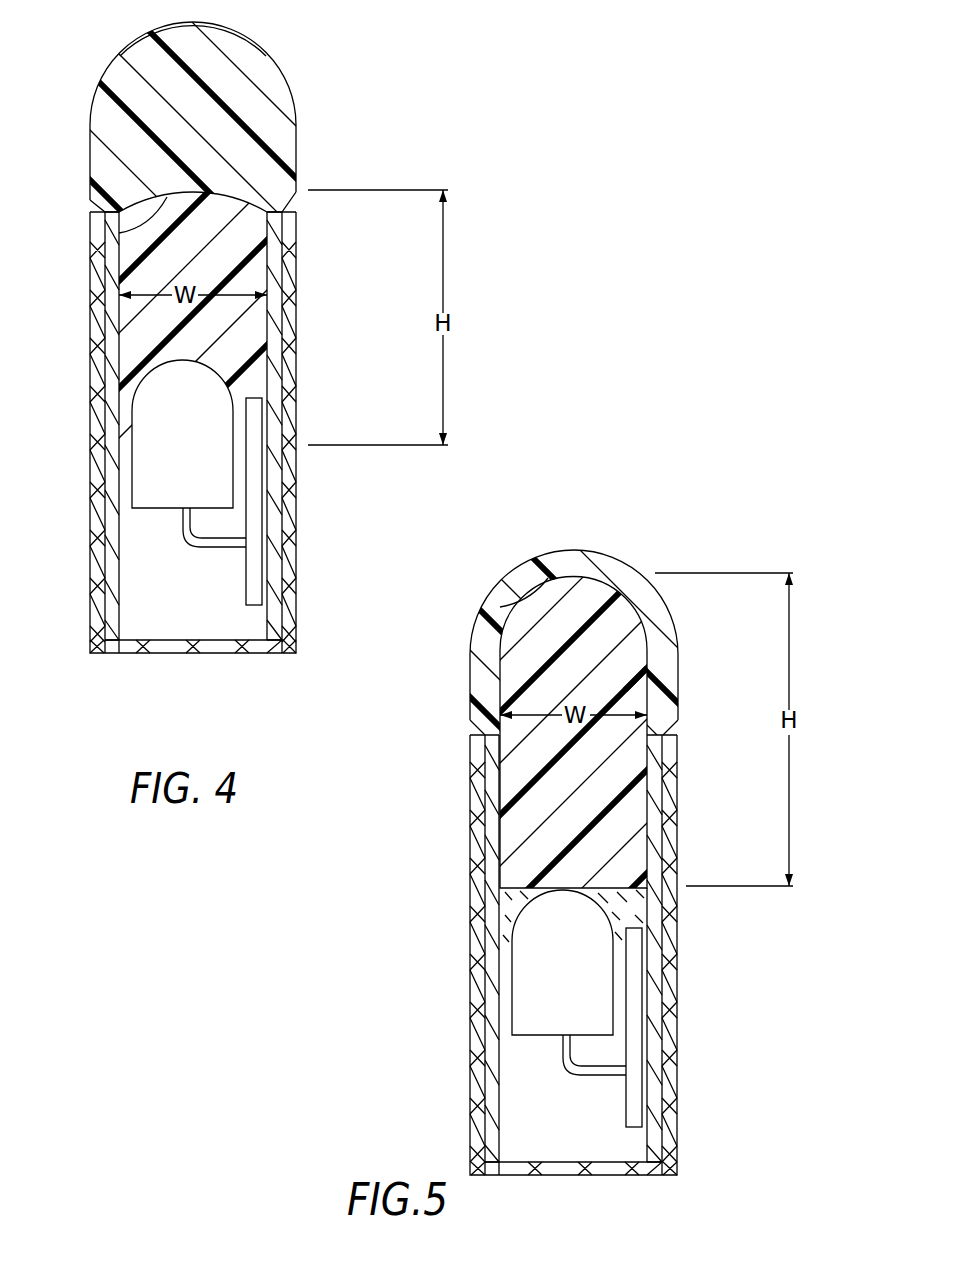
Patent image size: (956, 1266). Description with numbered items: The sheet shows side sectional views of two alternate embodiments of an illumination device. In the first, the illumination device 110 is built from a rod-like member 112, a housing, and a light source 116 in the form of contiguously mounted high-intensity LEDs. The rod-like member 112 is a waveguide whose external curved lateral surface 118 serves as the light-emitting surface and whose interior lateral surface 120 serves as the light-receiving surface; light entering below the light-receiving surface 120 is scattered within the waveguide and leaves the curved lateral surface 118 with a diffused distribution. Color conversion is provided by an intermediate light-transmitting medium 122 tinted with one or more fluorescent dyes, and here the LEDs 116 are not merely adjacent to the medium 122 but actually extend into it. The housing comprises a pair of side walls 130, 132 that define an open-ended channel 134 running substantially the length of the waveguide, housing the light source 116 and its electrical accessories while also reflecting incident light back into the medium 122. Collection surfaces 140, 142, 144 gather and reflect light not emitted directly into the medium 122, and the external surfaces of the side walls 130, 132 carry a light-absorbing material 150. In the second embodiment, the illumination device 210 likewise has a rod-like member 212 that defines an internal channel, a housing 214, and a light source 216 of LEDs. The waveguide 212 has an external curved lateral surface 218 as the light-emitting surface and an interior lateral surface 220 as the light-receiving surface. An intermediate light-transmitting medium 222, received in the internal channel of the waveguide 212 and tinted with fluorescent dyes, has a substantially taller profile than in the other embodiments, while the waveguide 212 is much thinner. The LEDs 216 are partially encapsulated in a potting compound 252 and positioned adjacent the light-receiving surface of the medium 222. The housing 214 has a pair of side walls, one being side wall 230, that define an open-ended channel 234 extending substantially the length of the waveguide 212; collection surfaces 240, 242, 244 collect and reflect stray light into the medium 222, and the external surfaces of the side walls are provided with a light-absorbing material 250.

In FIG. 4, the illumination device 110 is at (287, 62).
In FIG. 4, the rod-like member 112 is at (97, 158).
In FIG. 4, the light source 116 is at (212, 435).
In FIG. 4, the external curved lateral surface 118 is at (128, 58).
In FIG. 4, the interior lateral surface 120 is at (125, 232).
In FIG. 4, the intermediate light-transmitting medium 122 is at (245, 243).
In FIG. 4, the side wall 130 is at (90, 405).
In FIG. 4, the side wall 132 is at (297, 370).
In FIG. 4, the open-ended channel 134 is at (145, 560).
In FIG. 4, the collection surface 140 is at (125, 652).
In FIG. 4, the collection surface 142 is at (258, 630).
In FIG. 4, the collection surface 144 is at (170, 645).
In FIG. 4, the light-absorbing material 150 is at (90, 520).
In FIG. 5, the illumination device 210 is at (648, 545).
In FIG. 5, the rod-like member 212 is at (473, 700).
In FIG. 5, the housing 214 is at (680, 1140).
In FIG. 5, the light source 216 is at (590, 945).
In FIG. 5, the external curved lateral surface 218 is at (560, 550).
In FIG. 5, the interior lateral surface 220 is at (503, 607).
In FIG. 5, the intermediate light-transmitting medium 222 is at (635, 693).
In FIG. 5, the side wall 230 is at (472, 998).
In FIG. 5, the open-ended channel 234 is at (527, 1055).
In FIG. 5, the collection surface 240 is at (502, 1128).
In FIG. 5, the collection surface 242 is at (642, 1165).
In FIG. 5, the collection surface 244 is at (574, 1191).
In FIG. 5, the light-absorbing material 250 is at (478, 1090).
In FIG. 5, the potting compound 252 is at (508, 908).